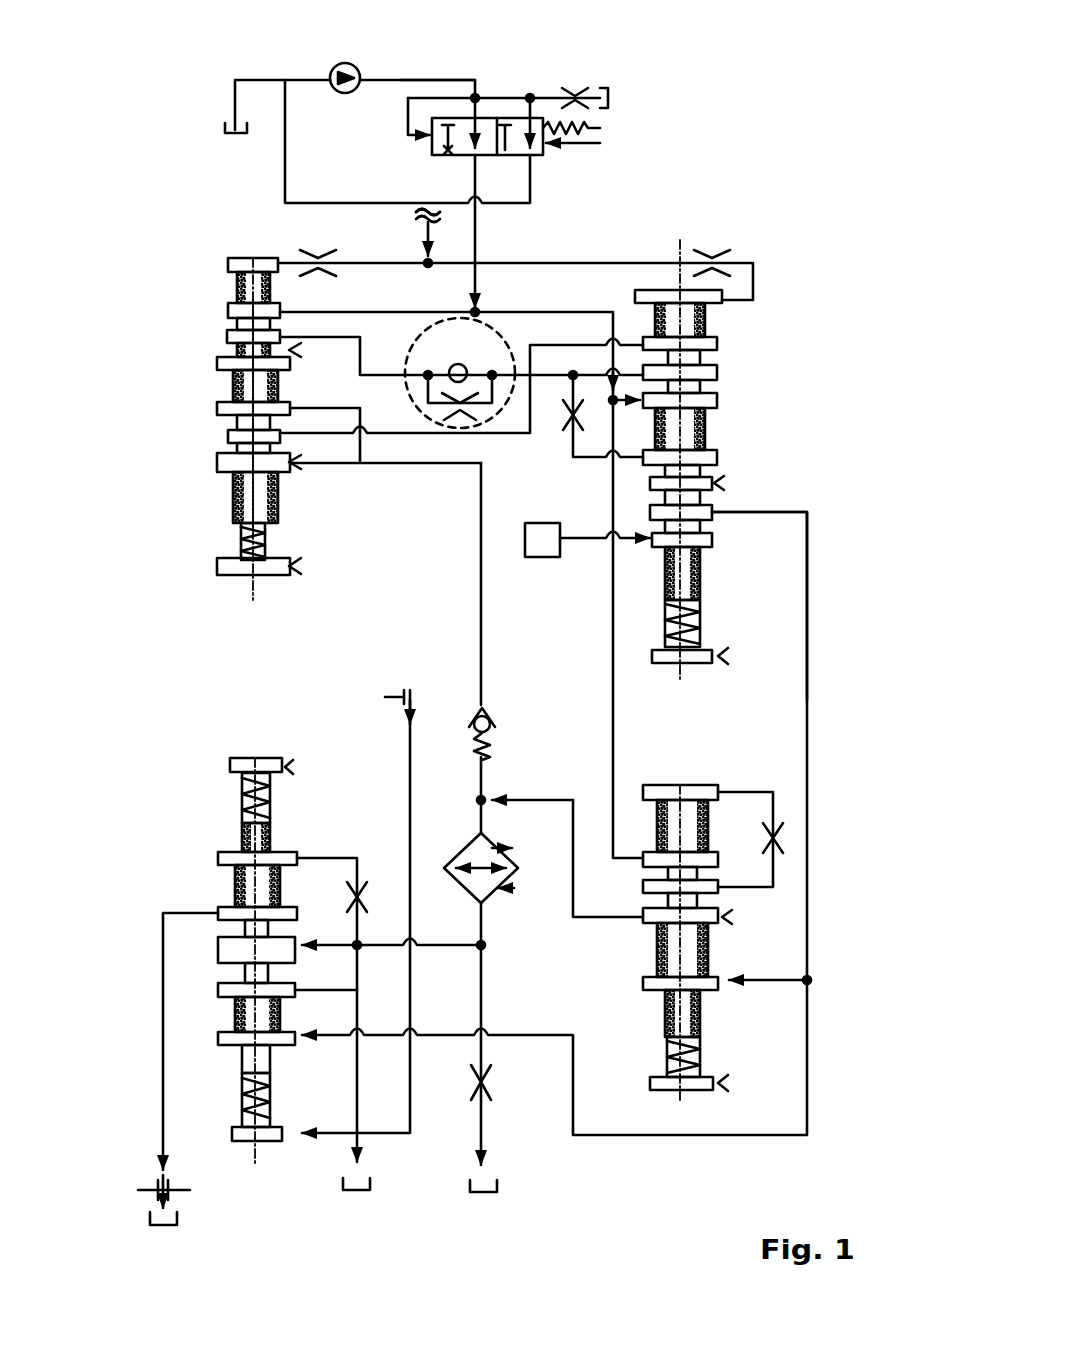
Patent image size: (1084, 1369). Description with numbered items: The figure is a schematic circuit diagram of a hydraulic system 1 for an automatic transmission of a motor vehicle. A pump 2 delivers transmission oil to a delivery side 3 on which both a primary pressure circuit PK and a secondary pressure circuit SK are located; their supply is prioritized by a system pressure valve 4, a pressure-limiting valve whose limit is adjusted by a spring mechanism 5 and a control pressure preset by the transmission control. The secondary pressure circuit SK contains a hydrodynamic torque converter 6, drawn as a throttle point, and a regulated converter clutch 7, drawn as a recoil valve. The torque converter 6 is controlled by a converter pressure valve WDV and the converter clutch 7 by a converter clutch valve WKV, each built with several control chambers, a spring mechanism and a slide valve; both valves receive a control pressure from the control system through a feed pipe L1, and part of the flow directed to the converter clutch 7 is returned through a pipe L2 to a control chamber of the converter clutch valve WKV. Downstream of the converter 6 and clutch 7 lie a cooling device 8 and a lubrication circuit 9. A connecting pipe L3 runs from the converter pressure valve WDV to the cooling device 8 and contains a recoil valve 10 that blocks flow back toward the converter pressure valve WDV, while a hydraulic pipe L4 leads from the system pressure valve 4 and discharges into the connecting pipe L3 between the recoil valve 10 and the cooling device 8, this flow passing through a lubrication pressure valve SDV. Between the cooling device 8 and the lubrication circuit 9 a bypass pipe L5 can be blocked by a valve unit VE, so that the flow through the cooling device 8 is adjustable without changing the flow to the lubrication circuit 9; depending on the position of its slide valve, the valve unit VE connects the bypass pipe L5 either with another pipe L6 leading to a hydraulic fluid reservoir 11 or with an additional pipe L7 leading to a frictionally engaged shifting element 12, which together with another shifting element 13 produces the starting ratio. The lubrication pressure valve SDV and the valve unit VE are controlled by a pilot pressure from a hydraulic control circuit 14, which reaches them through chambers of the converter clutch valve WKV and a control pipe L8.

The hydraulic system 1 is at (198, 188).
The pump 2 is at (333, 68).
The delivery side 3 is at (388, 80).
The system pressure valve 4 is at (432, 150).
The spring mechanism 5 is at (590, 128).
The hydrodynamic torque converter 6 is at (470, 369).
The regulated converter clutch 7 is at (462, 360).
The cooling device 8 is at (470, 845).
The lubrication circuit 9 is at (485, 1115).
The recoil valve 10 is at (501, 730).
The hydraulic fluid reservoir 11 is at (222, 125).
The frictionally engaged shifting element 12 is at (153, 1180).
The other shifting element 13 is at (393, 688).
The hydraulic control circuit 14 is at (540, 558).
The feed pipe L1 is at (425, 235).
The pipe L2 is at (573, 468).
The connecting pipe L3 is at (481, 592).
The hydraulic pipe L4 is at (613, 675).
The bypass pipe L5 is at (438, 950).
The other pipe L6 is at (357, 1092).
The additional pipe L7 is at (163, 1072).
The control pipe L8 is at (807, 748).
The primary pressure circuit PK is at (573, 86).
The secondary pressure circuit SK is at (612, 248).
The converter pressure valve WDV is at (253, 443).
The converter clutch valve WKV is at (779, 492).
The valve unit VE is at (211, 955).
The lubrication pressure valve SDV is at (758, 986).